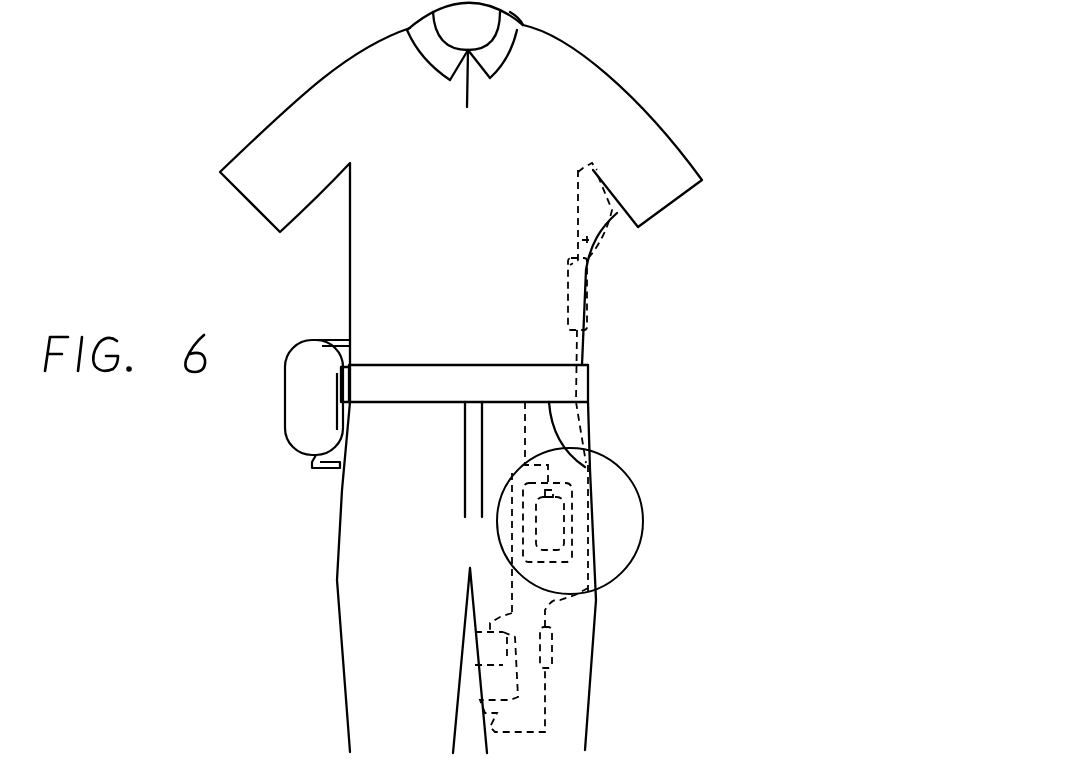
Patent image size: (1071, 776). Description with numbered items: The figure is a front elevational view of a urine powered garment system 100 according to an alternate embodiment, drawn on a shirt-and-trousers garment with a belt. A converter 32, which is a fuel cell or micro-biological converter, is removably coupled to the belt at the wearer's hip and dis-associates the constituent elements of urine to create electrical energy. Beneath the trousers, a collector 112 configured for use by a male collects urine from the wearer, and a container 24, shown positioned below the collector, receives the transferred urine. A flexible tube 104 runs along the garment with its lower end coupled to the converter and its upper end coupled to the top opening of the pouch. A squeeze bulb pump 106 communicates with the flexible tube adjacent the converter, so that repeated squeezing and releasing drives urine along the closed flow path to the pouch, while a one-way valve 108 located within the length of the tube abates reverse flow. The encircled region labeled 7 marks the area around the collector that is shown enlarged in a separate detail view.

The urine powered garment system 100 is at (694, 150).
The flexible tube 104 is at (583, 327).
The squeeze bulb pump 106 is at (593, 217).
The one-way valve 108 is at (583, 283).
The collector 112 is at (552, 520).
The detail view circle 7 is at (644, 516).
The container 24 is at (490, 650).
The converter 32 is at (290, 433).